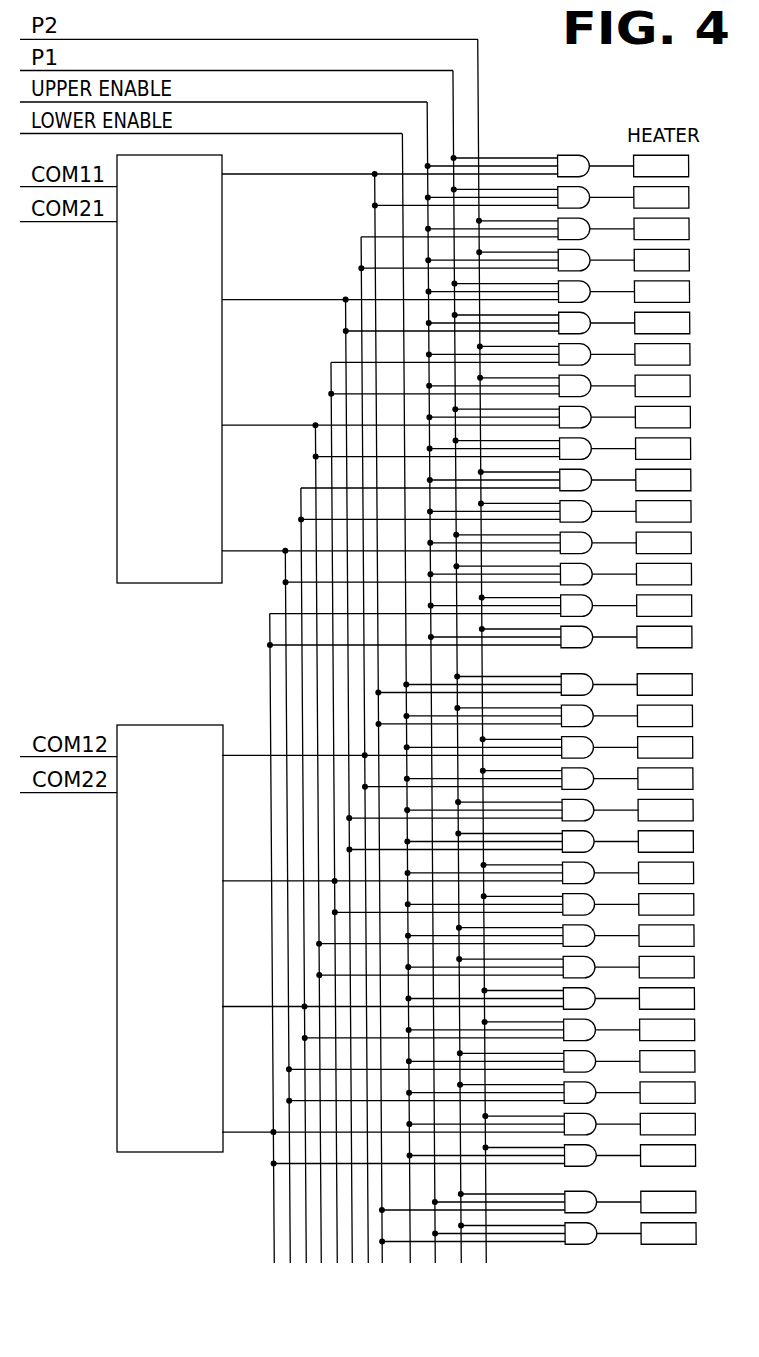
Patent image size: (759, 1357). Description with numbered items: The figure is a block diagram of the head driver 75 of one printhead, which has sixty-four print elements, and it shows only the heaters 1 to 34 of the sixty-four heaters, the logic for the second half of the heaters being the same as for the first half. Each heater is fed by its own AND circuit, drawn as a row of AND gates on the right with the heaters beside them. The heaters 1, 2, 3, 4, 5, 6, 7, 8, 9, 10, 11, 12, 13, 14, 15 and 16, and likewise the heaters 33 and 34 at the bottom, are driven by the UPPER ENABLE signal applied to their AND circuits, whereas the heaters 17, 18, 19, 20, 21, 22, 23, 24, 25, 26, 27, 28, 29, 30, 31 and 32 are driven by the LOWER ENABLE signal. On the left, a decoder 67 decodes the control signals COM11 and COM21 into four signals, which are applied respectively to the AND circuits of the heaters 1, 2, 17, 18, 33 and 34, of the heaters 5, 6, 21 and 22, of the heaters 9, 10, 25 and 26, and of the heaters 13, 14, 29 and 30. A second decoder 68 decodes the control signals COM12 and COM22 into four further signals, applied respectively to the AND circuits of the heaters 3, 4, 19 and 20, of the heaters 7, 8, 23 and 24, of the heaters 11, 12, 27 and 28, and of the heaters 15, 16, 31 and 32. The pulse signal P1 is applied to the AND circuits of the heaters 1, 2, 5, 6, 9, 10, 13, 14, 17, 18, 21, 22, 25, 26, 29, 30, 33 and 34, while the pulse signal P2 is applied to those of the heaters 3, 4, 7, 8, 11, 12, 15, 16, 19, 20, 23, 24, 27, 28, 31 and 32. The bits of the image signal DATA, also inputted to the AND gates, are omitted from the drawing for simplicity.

The decoder 67 is at (117, 315).
The decoder 68 is at (117, 882).
The head driver 75 is at (541, 117).
The heater 1 is at (678, 166).
The heater 2 is at (678, 197).
The heater 3 is at (678, 229).
The heater 4 is at (678, 260).
The heater 5 is at (678, 292).
The heater 6 is at (679, 323).
The heater 7 is at (679, 354).
The heater 8 is at (679, 386).
The heater 9 is at (679, 417).
The heater 10 is at (683, 449).
The heater 11 is at (683, 480).
The heater 12 is at (683, 511).
The heater 13 is at (683, 543).
The heater 14 is at (683, 574).
The heater 15 is at (684, 606).
The heater 16 is at (684, 637).
The heater 17 is at (684, 685).
The heater 18 is at (684, 716).
The heater 19 is at (685, 747).
The heater 20 is at (685, 779).
The heater 21 is at (685, 810).
The heater 22 is at (685, 842).
The heater 23 is at (685, 873).
The heater 24 is at (686, 904).
The heater 25 is at (686, 936).
The heater 26 is at (686, 967).
The heater 27 is at (686, 999).
The heater 28 is at (687, 1030).
The heater 29 is at (687, 1061).
The heater 30 is at (687, 1093).
The heater 31 is at (687, 1124).
The heater 32 is at (687, 1156).
The heater 33 is at (688, 1202).
The heater 34 is at (688, 1234).